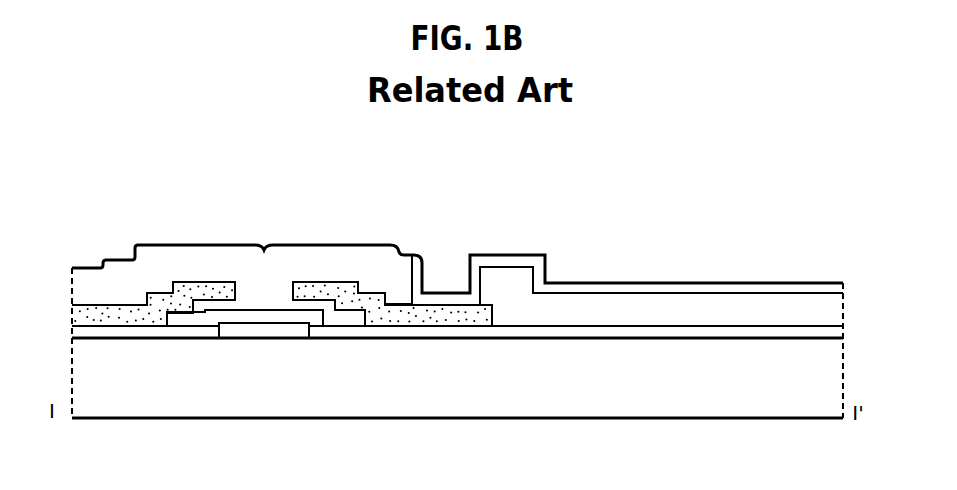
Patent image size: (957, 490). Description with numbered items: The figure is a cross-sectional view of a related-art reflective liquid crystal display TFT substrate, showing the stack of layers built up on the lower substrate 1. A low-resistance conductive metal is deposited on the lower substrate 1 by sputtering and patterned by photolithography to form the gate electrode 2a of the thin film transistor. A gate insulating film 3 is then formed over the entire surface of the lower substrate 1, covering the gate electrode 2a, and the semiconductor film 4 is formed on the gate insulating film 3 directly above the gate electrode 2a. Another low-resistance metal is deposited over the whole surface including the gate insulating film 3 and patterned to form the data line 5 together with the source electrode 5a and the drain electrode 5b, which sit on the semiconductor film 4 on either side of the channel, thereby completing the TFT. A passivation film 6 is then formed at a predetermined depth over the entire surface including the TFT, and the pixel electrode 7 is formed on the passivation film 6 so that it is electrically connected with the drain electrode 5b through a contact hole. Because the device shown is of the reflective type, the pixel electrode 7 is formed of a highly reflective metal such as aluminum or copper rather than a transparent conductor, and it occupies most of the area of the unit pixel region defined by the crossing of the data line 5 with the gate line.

The lower substrate 1 is at (833, 373).
The gate electrode 2a is at (268, 330).
The gate insulating film 3 is at (843, 330).
The semiconductor film 4 is at (260, 307).
The data line 5 is at (77, 312).
The source electrode 5a is at (197, 290).
The drain electrode 5b is at (318, 288).
The passivation film 6 is at (843, 305).
The pixel electrode 7 is at (657, 290).